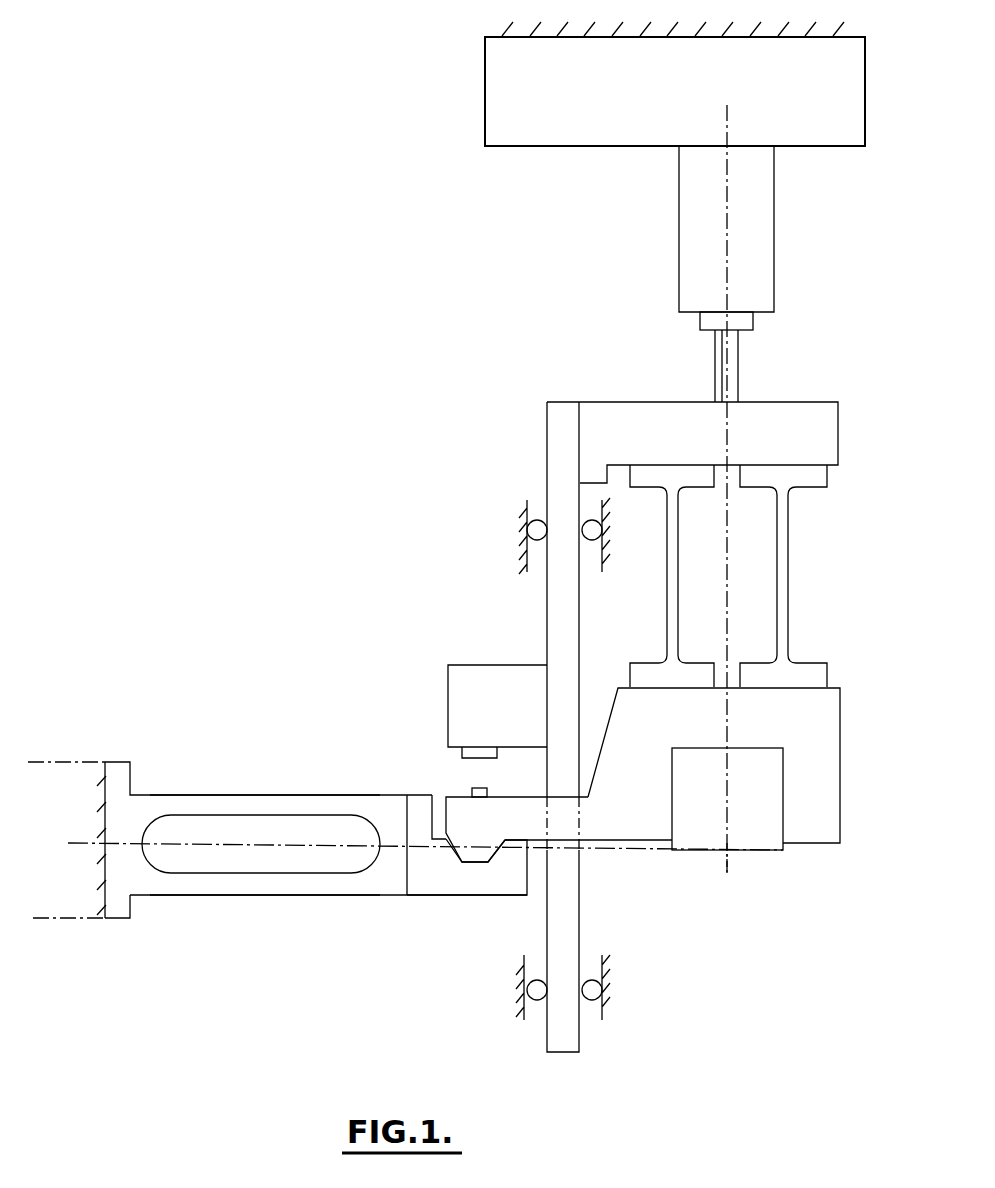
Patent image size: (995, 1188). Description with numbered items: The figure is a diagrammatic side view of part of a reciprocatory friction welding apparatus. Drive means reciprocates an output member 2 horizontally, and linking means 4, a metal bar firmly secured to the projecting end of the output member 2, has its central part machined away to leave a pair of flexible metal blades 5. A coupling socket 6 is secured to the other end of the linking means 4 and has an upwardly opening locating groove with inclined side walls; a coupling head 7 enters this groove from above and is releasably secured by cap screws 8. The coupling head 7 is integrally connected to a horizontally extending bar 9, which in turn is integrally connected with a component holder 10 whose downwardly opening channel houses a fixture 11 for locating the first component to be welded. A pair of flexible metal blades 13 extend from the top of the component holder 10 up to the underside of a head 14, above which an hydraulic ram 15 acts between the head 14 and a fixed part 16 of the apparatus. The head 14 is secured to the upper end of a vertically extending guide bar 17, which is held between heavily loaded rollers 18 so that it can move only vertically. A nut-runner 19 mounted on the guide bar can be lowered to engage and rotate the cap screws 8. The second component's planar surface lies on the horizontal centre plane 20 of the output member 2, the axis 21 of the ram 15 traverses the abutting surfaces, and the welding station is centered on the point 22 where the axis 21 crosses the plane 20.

The output member 2 is at (67, 760).
The linking means 4 is at (179, 776).
The flexible metal blades 5 is at (297, 895).
The coupling socket 6 is at (444, 877).
The coupling head 7 is at (480, 838).
The cap screws 8 is at (475, 788).
The horizontally extending bar 9 is at (560, 820).
The component holder 10 is at (820, 780).
The fixture 11 is at (762, 830).
The flexible metal blades 13 is at (777, 540).
The head 14 is at (820, 434).
The hydraulic ram 15 is at (757, 256).
The fixed part 16 is at (812, 128).
The guide bar 17 is at (562, 605).
The rollers 18 is at (592, 522).
The nut-runner 19 is at (466, 686).
The horizontal centre plane 20 is at (215, 845).
The axis of the ram 21 is at (728, 632).
The welding station point 22 is at (727, 855).